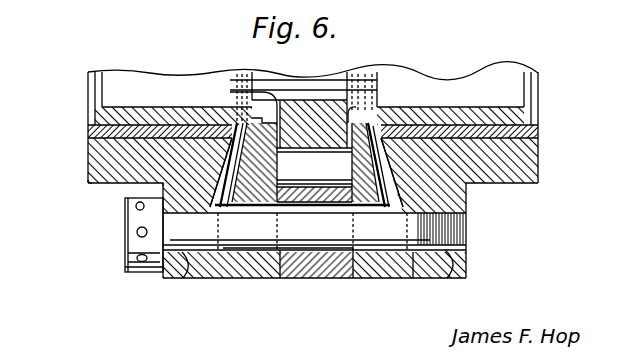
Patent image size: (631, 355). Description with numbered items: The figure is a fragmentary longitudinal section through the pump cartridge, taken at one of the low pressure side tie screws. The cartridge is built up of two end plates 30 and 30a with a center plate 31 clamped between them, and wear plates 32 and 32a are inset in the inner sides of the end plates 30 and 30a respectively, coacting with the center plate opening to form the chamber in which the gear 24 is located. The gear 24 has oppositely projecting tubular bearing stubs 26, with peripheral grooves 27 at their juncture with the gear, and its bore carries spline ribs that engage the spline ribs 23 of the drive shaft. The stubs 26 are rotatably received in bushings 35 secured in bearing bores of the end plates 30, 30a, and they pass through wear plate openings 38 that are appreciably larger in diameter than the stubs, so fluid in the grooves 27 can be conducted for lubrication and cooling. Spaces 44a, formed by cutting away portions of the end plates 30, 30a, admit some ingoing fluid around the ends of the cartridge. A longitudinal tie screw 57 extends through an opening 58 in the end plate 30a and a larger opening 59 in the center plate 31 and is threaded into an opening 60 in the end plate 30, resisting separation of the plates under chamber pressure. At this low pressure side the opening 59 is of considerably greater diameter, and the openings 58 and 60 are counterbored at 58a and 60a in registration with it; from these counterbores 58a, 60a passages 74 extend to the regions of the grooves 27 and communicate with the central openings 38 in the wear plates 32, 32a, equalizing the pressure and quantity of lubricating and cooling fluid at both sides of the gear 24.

The spline ribs 23 is at (275, 76).
The gear 24 is at (328, 112).
The tubular bearing studs 26 is at (157, 97).
The peripheral grooves 27 is at (235, 92).
The end plate 30 is at (540, 158).
The end plate 30a is at (220, 278).
The center plate 31 is at (330, 268).
The wear plate 32 is at (388, 157).
The wear plate 32a is at (260, 165).
The bushings 35 is at (88, 132).
The wear plate openings 38 is at (327, 160).
The spaces 44a is at (527, 212).
The tie screws 57 is at (178, 232).
The openings 58 is at (182, 276).
The counterbore 58a is at (258, 253).
The openings 59 is at (297, 252).
The openings 60 is at (447, 255).
The counterbore 60a is at (390, 253).
The passages 74 is at (228, 188).